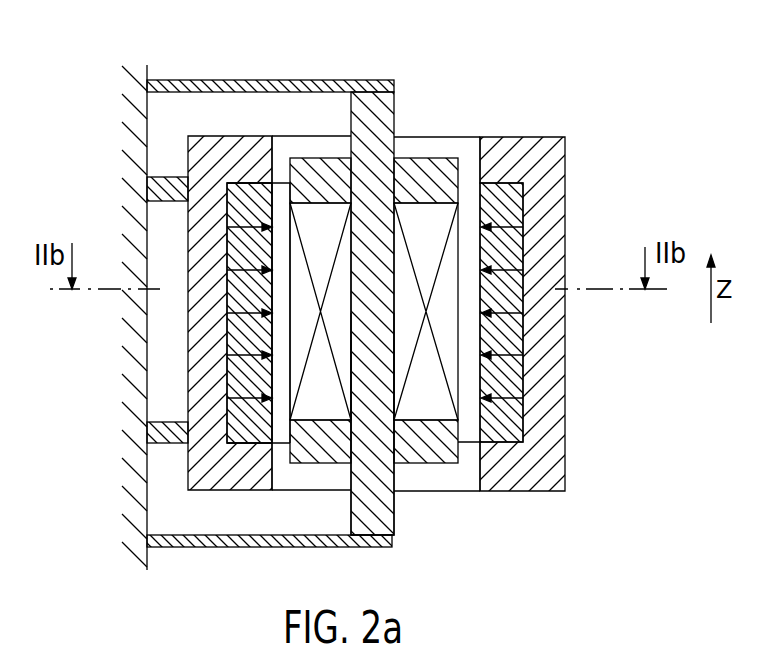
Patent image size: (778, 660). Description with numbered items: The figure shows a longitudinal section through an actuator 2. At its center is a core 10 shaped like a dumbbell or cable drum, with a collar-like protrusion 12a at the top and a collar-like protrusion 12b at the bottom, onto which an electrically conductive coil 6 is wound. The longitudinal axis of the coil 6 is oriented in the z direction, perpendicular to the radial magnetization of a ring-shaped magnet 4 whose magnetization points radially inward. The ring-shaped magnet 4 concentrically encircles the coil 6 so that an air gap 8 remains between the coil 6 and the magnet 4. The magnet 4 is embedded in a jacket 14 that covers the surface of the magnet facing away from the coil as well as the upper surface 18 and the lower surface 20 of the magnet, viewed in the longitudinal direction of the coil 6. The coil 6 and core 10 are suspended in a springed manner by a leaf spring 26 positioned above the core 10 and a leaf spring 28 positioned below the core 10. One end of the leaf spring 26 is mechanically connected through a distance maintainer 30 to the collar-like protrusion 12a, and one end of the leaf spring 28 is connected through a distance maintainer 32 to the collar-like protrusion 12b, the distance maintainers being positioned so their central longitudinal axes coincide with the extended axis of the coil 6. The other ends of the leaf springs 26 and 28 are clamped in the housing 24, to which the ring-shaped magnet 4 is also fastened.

The actuator 2 is at (497, 70).
The ring-shaped magnet 4 is at (233, 432).
The coil 6 is at (433, 220).
The air gap 8 is at (277, 432).
The core 10 is at (387, 382).
The collar-like protrusion 12a is at (327, 177).
The collar-like protrusion 12b is at (433, 450).
The jacket 14 is at (207, 382).
The upper surface 18 is at (258, 182).
The lower surface 20 is at (247, 443).
The housing 24 is at (128, 488).
The leaf spring 26 is at (243, 82).
The leaf spring 28 is at (327, 547).
The distance maintainer 30 is at (375, 148).
The distance maintainer 32 is at (382, 508).